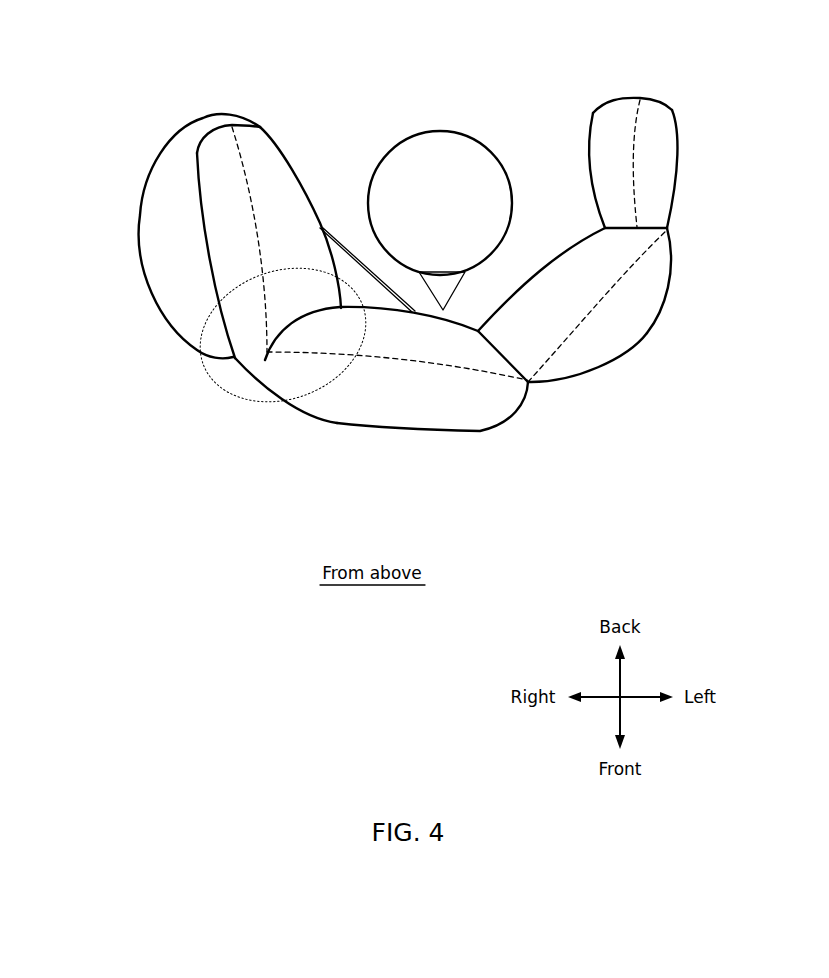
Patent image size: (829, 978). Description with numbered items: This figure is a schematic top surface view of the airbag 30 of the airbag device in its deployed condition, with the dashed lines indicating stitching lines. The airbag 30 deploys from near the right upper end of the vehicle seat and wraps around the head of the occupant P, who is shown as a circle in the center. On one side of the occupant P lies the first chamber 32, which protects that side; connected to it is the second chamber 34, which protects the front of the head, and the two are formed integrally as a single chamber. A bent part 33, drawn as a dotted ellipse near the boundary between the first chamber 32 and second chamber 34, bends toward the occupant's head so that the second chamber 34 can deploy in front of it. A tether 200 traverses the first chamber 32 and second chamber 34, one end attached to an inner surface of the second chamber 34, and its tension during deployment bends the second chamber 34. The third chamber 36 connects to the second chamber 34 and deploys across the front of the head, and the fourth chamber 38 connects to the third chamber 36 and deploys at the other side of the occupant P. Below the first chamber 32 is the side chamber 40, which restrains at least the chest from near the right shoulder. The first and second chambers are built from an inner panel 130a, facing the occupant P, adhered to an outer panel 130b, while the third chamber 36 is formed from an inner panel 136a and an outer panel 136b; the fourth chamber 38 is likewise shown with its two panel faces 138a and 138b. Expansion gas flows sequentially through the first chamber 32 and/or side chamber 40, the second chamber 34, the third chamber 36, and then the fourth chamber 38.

The airbag 30 is at (409, 276).
The first chamber 32 is at (228, 260).
The bent part 33 is at (247, 400).
The second chamber 34 is at (400, 412).
The third chamber 36 is at (613, 343).
The fourth chamber 38 is at (618, 115).
The side chamber 40 is at (150, 183).
The inner panel 130a is at (285, 158).
The outer panel 130b is at (308, 418).
The inner panel 136a is at (556, 248).
The outer panel 136b is at (673, 295).
The inner surface of armrest 138a is at (589, 142).
The outer surface of armrest 138b is at (680, 168).
The tether 200 is at (342, 237).
The occupant P is at (441, 131).